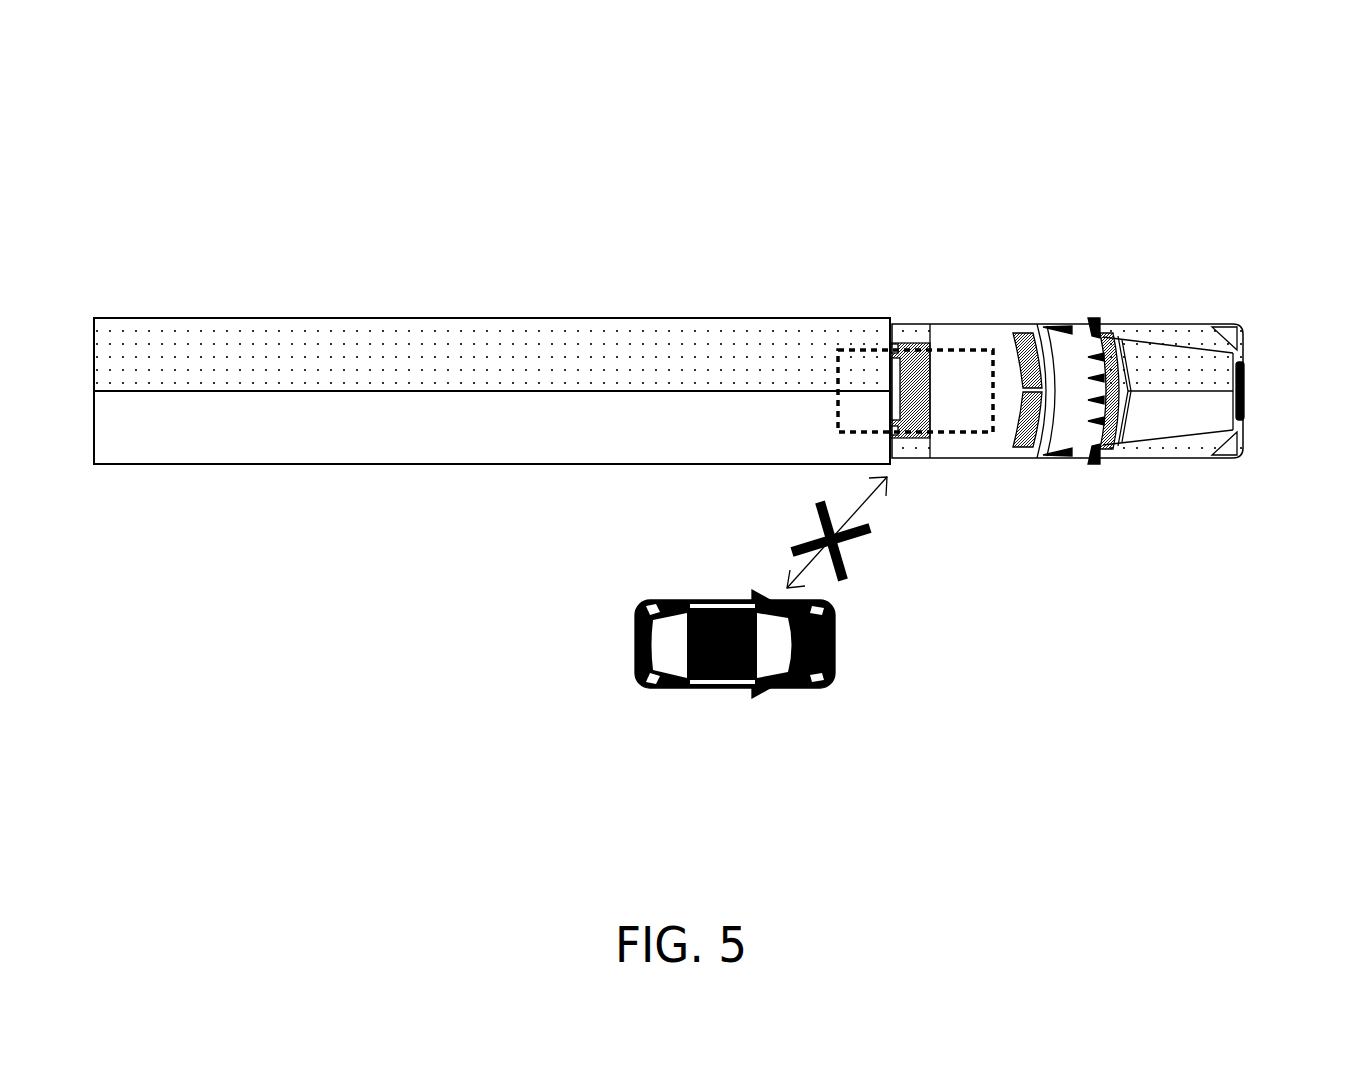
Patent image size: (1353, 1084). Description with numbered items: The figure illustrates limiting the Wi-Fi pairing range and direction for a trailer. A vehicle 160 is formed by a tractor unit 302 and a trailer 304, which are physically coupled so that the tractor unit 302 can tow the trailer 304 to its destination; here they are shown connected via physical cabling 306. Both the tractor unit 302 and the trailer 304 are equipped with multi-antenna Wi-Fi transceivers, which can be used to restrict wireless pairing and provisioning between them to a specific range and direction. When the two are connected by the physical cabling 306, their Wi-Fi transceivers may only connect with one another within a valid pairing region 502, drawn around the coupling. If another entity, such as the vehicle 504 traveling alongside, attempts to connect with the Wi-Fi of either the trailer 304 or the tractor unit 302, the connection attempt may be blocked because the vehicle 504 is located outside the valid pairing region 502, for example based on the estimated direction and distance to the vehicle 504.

The vehicle 160 is at (1228, 93).
The tractor unit 302 is at (1247, 285).
The trailer 304 is at (883, 285).
The physical cabling 306 is at (908, 316).
The valid pairing region 502 is at (968, 432).
The vehicle 504 is at (720, 690).